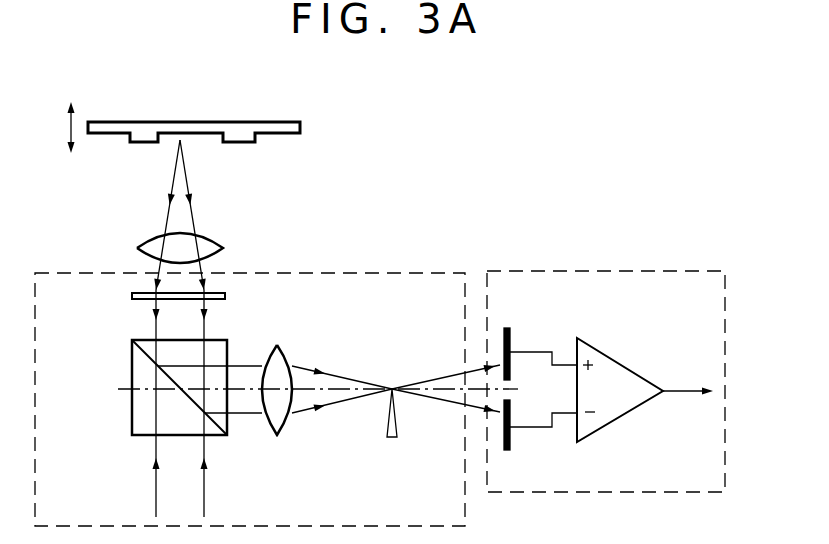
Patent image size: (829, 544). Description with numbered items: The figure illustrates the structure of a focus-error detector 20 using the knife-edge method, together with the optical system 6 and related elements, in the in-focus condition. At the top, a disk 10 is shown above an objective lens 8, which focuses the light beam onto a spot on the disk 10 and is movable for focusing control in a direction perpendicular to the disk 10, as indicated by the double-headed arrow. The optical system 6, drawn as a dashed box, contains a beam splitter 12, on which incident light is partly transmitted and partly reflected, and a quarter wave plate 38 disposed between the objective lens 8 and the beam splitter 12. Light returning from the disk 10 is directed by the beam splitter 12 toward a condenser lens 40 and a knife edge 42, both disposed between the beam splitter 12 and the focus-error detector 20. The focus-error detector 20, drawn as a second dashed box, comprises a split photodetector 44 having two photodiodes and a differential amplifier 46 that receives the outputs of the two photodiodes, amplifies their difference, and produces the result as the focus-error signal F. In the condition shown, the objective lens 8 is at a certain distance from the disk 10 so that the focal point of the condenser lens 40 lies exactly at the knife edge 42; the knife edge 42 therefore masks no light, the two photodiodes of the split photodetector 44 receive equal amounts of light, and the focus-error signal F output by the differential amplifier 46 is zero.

The optical system 6 is at (410, 271).
The objective lens 8 is at (157, 237).
The disk 10 is at (277, 135).
The beam splitter 12 is at (132, 413).
The focus-error detector 20 is at (648, 270).
The quarter wave plate 38 is at (217, 298).
The condenser lens 40 is at (288, 418).
The knife edge 42 is at (400, 422).
The split photodetector 44 is at (512, 330).
The differential amplifier 46 is at (622, 360).